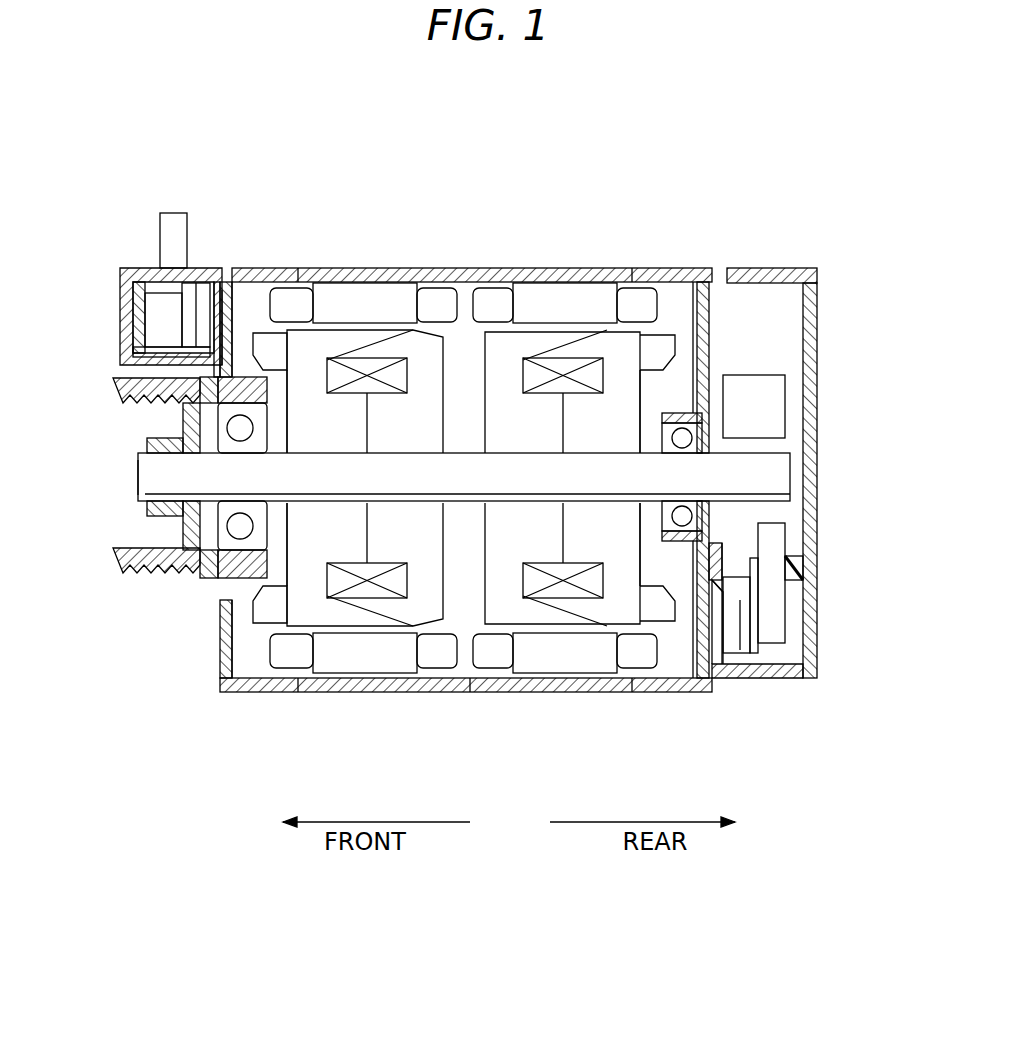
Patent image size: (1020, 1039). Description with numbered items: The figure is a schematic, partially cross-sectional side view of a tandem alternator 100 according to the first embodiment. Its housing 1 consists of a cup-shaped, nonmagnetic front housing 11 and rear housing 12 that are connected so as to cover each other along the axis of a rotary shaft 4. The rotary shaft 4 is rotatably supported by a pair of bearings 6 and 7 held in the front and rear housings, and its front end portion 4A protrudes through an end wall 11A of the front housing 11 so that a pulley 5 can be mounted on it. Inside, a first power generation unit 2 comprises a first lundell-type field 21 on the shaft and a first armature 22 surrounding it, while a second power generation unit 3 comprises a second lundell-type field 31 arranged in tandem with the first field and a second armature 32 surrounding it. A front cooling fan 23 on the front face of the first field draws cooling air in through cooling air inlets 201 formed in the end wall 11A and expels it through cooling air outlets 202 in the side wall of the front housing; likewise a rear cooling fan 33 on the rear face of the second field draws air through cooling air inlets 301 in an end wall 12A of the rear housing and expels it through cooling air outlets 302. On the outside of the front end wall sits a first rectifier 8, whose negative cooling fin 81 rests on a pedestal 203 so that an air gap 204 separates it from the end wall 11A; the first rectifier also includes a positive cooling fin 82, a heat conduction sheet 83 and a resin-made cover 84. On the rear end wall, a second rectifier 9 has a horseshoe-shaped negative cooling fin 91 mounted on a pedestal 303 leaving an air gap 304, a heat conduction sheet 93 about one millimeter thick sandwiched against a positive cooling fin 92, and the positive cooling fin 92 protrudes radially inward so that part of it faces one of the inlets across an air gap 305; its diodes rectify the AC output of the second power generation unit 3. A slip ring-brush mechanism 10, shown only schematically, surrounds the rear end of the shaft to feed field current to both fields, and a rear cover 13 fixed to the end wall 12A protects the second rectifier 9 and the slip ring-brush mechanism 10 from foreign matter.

The tandem alternator 100 is at (722, 152).
The housing 1 is at (463, 270).
The first power generation unit 2 is at (455, 347).
The second power generation unit 3 is at (662, 306).
The rotary shaft 4 is at (445, 487).
The front end portion 4A is at (145, 482).
The pulley 5 is at (113, 565).
The bearing 6 is at (228, 548).
The bearing 7 is at (712, 518).
The first rectifier 8 is at (119, 268).
The negative cooling fin 81 is at (188, 290).
The positive cooling fin 82 is at (152, 318).
The heat conduction sheet 83 is at (135, 348).
The resin-made cover 84 is at (138, 290).
The second rectifier 9 is at (790, 648).
The negative cooling fin 91 is at (765, 652).
The positive cooling fin 92 is at (772, 587).
The heat conduction sheet 93 is at (757, 618).
The slip ring-brush mechanism 10 is at (790, 412).
The front housing 11 is at (378, 694).
The end wall 11A is at (224, 612).
The rear housing 12 is at (537, 694).
The end wall 12A is at (698, 694).
The rear cover 13 is at (810, 318).
The first lundell-type field 21 is at (305, 562).
The first armature 22 is at (372, 282).
The front cooling fan 23 is at (266, 305).
The cooling air inlets 201 is at (138, 370).
The cooling air outlets 202 is at (284, 268).
The pedestal 203 is at (230, 292).
The air gap 204 is at (212, 282).
The second lundell-type field 31 is at (607, 536).
The second armature 32 is at (570, 282).
The rear cooling fan 33 is at (668, 342).
The cooling air inlets 301 is at (724, 548).
The cooling air outlets 302 is at (640, 268).
The pedestal 303 is at (740, 652).
The air gap 304 is at (716, 640).
The air gap 305 is at (790, 563).